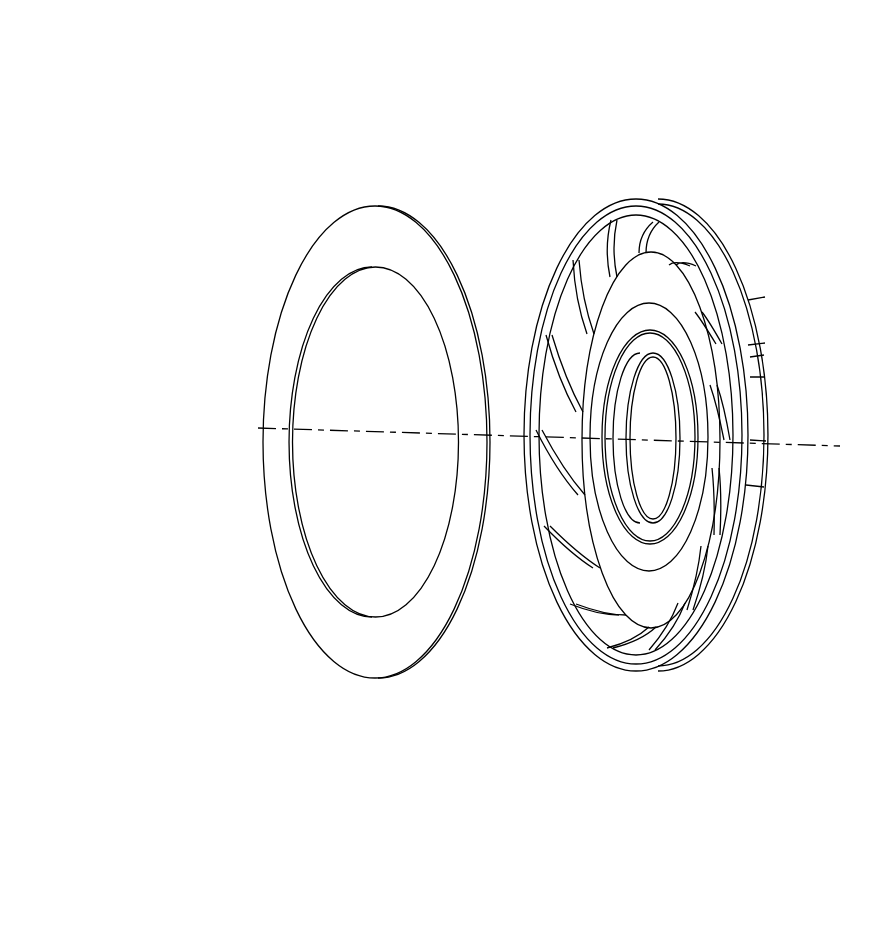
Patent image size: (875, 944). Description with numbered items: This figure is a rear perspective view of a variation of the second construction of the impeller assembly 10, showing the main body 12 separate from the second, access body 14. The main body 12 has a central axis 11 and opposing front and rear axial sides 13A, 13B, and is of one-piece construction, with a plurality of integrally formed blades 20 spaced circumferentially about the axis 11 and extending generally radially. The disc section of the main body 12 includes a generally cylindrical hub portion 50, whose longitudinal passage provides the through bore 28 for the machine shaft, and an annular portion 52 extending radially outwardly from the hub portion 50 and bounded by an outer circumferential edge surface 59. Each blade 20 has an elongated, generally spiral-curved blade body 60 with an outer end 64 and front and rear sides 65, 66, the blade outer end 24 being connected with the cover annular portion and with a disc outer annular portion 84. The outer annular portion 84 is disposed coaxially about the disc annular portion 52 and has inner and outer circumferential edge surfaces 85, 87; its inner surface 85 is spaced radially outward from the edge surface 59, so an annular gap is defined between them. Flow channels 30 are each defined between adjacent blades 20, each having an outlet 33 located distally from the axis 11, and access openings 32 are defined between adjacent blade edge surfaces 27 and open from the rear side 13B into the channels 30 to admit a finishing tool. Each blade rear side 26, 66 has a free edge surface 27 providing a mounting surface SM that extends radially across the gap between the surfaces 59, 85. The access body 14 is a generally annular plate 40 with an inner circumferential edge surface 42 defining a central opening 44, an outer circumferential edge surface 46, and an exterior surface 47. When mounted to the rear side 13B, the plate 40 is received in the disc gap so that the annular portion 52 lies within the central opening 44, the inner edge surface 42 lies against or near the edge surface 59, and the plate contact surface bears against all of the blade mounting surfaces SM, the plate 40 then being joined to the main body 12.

The impeller assembly 10 is at (509, 118).
The central axis 11 is at (803, 447).
The main body 12 is at (648, 148).
The front axial side 13A is at (752, 324).
The rear axial side 13B is at (522, 410).
The second body 14 is at (379, 174).
The blades 20 is at (575, 274).
The outer end 24 is at (682, 200).
The rear side 26 is at (698, 316).
The edge surface 27 is at (582, 300).
The through bore 28 is at (613, 383).
The flow channels 30 is at (743, 281).
The access openings 32 is at (717, 397).
The outlet 33 is at (745, 301).
The annular plate 40 is at (305, 249).
The inner circumferential edge surface 42 is at (321, 557).
The central opening 44 is at (333, 367).
The outer circumferential edge surface 46 is at (452, 633).
The exterior surface 47 is at (396, 250).
The hub portion 50 is at (576, 483).
The annular portion 52 is at (572, 510).
The outer circumferential edge surface 59 is at (750, 518).
The blade body 60 is at (620, 236).
The outer end 64 is at (678, 238).
The front side 65 is at (637, 216).
The rear side 66 is at (592, 234).
The disc outer annular portion 84 is at (622, 676).
The inner circumferential edge surface 85 is at (664, 640).
The outer circumferential edge surface 87 is at (711, 636).
The mounting surface SM is at (585, 244).